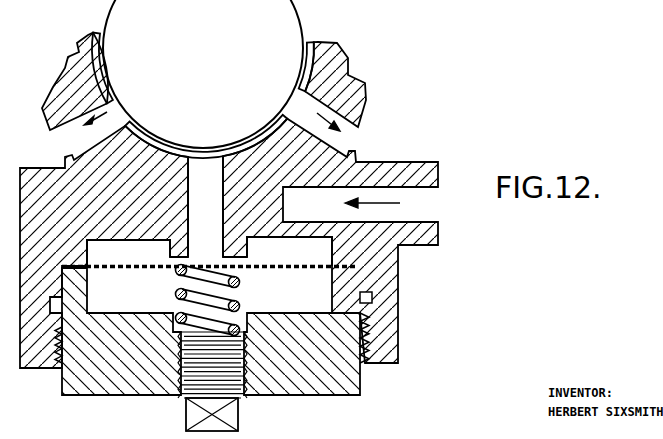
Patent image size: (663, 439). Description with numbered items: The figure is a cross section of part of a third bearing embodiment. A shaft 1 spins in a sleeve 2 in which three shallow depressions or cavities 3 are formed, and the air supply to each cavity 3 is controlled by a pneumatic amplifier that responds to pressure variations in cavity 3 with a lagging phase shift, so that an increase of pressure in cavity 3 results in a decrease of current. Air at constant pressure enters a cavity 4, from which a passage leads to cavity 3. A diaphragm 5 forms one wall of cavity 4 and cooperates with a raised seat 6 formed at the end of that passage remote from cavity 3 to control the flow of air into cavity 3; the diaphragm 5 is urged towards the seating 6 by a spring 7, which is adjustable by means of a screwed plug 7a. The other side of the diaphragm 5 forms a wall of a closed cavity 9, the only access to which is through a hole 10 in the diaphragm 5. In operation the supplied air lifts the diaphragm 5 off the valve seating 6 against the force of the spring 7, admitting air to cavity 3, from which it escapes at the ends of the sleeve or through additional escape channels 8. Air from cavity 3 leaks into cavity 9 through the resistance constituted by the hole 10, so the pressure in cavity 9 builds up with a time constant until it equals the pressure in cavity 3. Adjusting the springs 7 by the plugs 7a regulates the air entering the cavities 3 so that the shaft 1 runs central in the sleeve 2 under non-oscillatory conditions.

The shaft 1 is at (243, 62).
The sleeve 2 is at (293, 90).
The cavity 3 is at (243, 157).
The cavity 4 is at (289, 251).
The diaphragm 5 is at (108, 269).
The raised seat 6 is at (170, 252).
The spring 7 is at (176, 293).
The screwed plug 7a is at (235, 412).
The escape channels 8 is at (75, 137).
The closed cavity 9 is at (300, 301).
The hole 10 is at (208, 265).